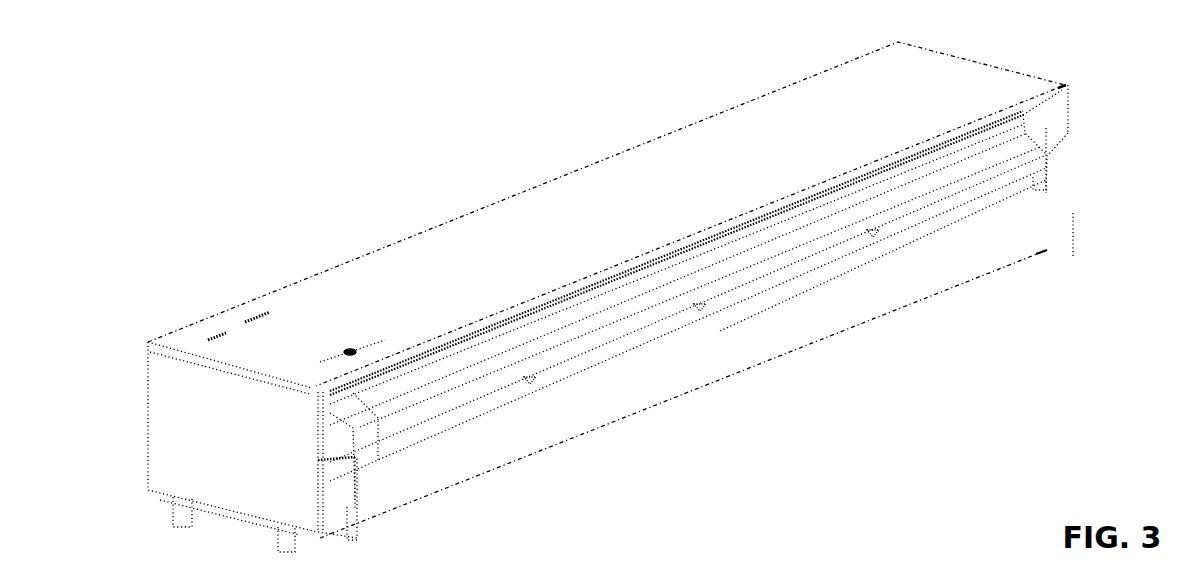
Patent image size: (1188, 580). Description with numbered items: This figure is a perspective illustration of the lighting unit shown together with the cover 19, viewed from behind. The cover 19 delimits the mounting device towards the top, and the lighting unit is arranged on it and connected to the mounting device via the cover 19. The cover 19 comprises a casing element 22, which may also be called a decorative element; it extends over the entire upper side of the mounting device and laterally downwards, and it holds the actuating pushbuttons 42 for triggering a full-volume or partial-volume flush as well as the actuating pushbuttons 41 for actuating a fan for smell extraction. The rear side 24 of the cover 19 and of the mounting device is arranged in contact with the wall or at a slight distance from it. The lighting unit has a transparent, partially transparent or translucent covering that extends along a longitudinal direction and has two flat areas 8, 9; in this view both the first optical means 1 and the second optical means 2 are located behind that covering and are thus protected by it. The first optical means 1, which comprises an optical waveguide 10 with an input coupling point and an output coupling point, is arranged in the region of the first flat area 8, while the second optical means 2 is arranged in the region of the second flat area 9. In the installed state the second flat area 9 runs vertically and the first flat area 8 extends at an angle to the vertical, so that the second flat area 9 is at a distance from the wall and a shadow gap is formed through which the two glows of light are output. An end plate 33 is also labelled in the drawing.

The first optical means 1 is at (455, 367).
The second optical means 2 is at (665, 313).
The first flat area 8 is at (573, 324).
The second flat area 9 is at (488, 335).
The optical waveguide 10 is at (760, 252).
The cover 19 is at (407, 275).
The casing element 22 is at (582, 200).
The rear side 24 is at (858, 297).
The end plate 33 is at (365, 440).
The actuating pushbuttons 41 is at (350, 352).
The actuating pushbuttons 42 is at (217, 337).